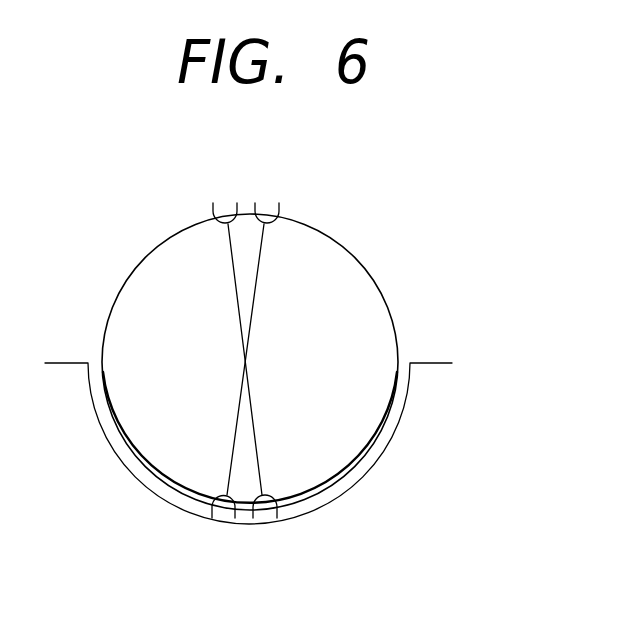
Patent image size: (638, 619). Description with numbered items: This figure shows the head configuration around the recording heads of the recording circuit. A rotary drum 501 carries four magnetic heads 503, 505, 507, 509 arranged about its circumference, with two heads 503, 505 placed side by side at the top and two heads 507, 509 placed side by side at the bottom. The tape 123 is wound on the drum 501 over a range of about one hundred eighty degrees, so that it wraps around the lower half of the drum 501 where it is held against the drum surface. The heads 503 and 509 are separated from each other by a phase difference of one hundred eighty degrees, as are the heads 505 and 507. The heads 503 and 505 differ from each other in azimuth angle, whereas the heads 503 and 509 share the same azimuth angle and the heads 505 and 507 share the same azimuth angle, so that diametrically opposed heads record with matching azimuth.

The drum 501 is at (348, 248).
The tape 123 is at (433, 362).
The magnetic head 503 is at (225, 202).
The magnetic head 505 is at (268, 202).
The magnetic head 507 is at (222, 517).
The magnetic head 509 is at (267, 517).